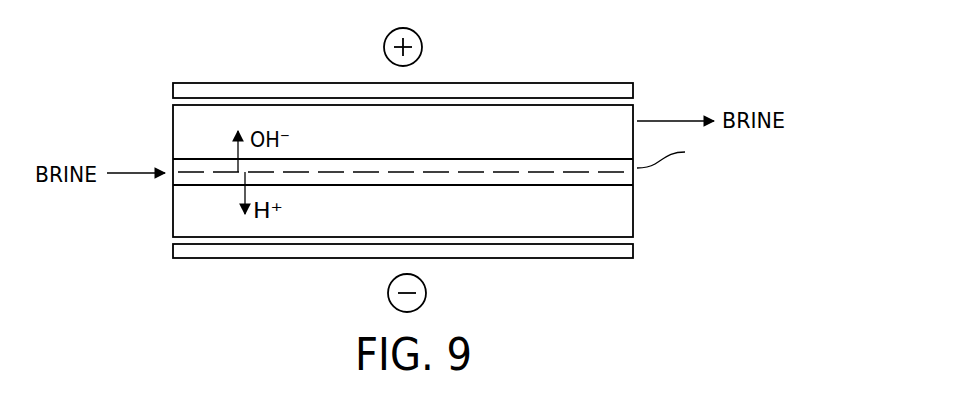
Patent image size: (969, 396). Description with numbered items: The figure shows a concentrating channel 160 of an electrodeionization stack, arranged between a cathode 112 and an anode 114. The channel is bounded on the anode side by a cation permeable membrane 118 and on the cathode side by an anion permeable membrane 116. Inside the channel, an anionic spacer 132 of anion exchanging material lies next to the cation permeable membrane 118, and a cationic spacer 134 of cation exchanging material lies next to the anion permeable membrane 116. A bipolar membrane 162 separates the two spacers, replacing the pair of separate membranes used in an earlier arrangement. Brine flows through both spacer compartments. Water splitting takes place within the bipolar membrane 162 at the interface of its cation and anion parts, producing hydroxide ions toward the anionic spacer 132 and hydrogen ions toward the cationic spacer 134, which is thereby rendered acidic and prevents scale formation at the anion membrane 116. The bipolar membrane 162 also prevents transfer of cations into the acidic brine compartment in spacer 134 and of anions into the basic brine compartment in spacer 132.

The concentrating channel 160 is at (240, 62).
The anode 114 is at (422, 43).
The cathode 112 is at (426, 293).
The cation permeable membrane 118 is at (523, 82).
The anion permeable membrane 116 is at (528, 258).
The anionic spacer 132 is at (183, 123).
The cationic spacer 134 is at (183, 213).
The bipolar membrane 162 is at (637, 176).